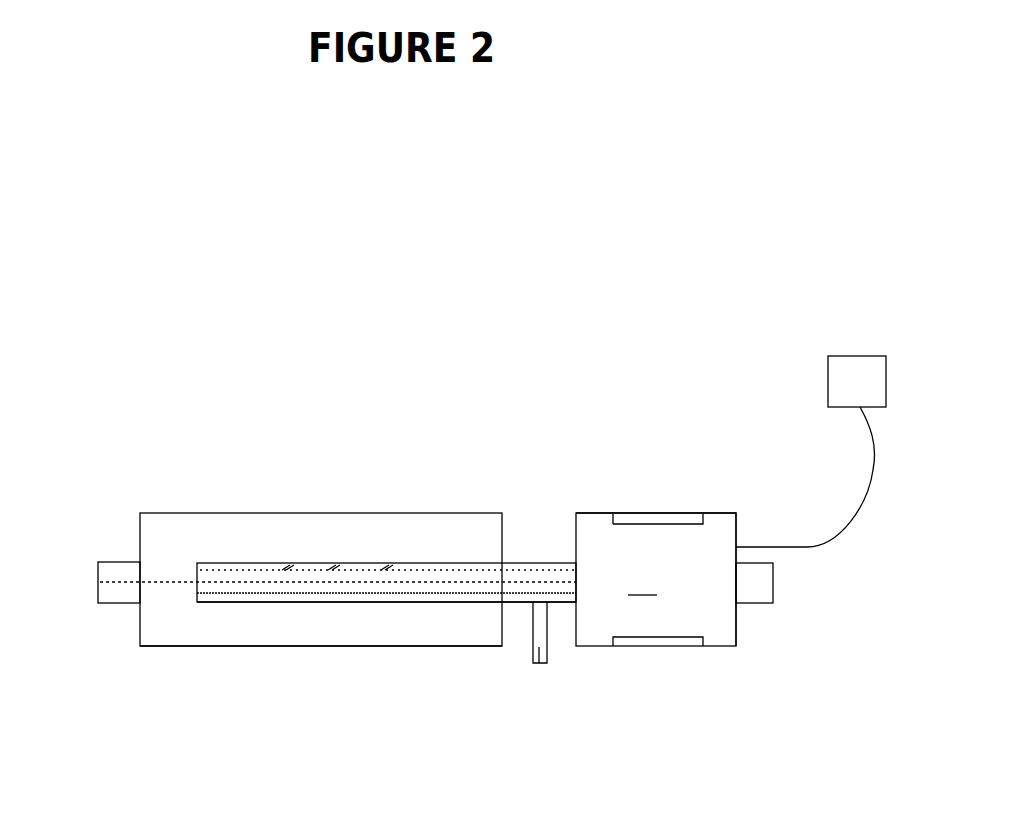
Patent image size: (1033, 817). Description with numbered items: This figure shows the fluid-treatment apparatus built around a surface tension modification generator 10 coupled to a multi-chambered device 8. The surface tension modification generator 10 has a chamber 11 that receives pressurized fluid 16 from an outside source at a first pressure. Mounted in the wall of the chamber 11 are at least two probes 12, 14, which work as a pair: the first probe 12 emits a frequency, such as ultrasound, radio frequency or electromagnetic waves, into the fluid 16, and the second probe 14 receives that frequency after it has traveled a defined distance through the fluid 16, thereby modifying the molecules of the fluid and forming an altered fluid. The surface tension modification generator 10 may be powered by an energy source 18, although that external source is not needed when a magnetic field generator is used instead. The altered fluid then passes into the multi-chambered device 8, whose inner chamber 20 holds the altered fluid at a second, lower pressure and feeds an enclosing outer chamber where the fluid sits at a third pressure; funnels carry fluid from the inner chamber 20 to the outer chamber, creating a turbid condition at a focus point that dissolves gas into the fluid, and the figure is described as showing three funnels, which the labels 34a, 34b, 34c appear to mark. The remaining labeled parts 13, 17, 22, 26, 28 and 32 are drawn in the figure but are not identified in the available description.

The multi-chambered device 8 is at (214, 513).
The surface tension modification generator 10 is at (736, 646).
The chamber 11 is at (737, 518).
The probe 12 is at (640, 646).
The lead 13 is at (537, 665).
The probe 14 is at (655, 516).
The fluid 16 is at (642, 584).
The optical axis 17 is at (153, 585).
The energy source 18 is at (828, 380).
The inner chamber 20 is at (390, 603).
The housing bottom wall 22 is at (280, 646).
The inner layer 26 is at (333, 603).
The outer layer 28 is at (230, 602).
The connector 32 is at (98, 562).
The first marker 34a is at (287, 570).
The second marker 34b is at (385, 570).
The third marker 34c is at (332, 570).